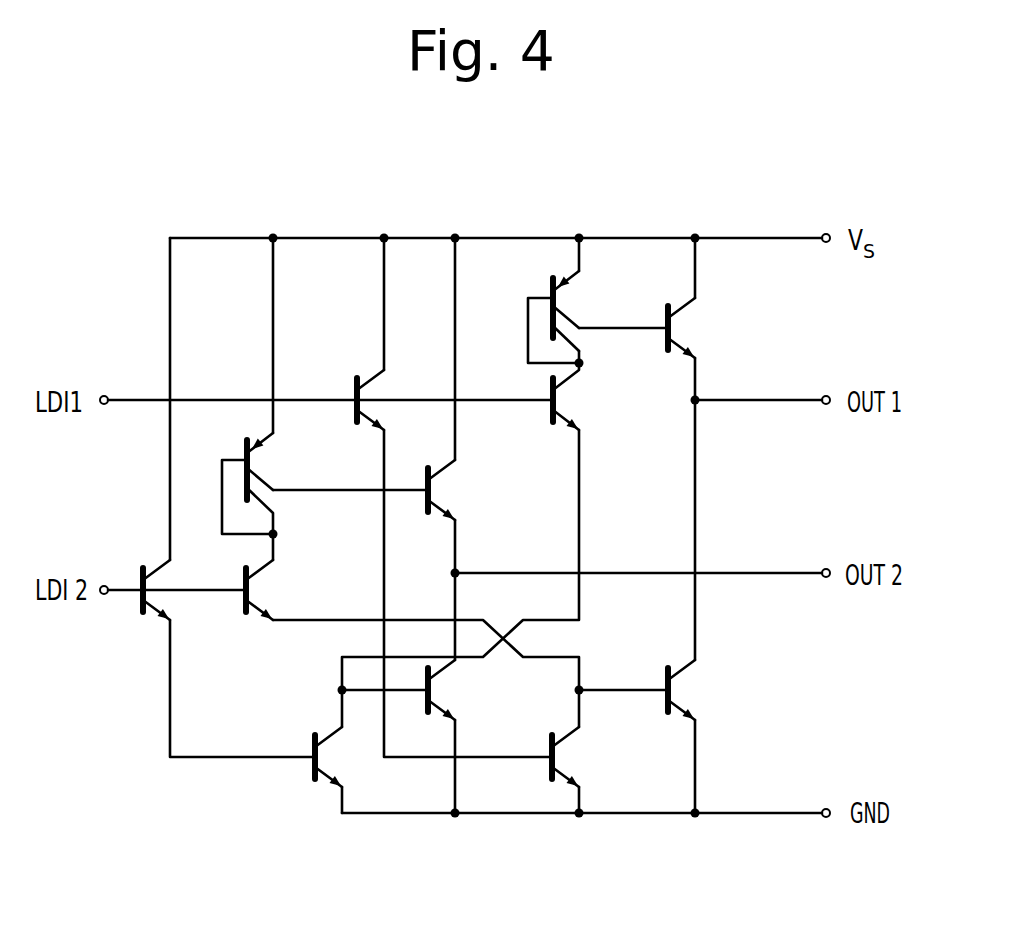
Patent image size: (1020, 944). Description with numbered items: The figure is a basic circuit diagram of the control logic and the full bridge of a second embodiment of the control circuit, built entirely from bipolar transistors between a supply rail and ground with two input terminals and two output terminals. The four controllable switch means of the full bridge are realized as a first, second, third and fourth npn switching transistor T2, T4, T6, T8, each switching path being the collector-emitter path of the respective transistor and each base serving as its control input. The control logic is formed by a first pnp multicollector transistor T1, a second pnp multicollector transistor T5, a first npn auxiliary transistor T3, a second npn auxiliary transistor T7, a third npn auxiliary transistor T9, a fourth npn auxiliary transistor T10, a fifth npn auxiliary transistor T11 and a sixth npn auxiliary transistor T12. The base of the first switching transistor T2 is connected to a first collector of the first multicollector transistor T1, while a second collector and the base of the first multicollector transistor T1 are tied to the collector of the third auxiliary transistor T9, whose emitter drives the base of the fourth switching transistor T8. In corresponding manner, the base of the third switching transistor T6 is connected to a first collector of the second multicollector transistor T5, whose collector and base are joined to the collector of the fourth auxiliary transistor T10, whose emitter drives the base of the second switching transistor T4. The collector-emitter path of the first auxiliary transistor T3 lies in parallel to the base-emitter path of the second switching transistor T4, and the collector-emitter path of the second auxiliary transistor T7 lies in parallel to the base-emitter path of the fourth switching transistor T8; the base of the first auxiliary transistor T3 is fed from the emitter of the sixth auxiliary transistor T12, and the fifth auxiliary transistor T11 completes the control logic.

The first pnp multicollector transistor T1 is at (561, 317).
The first npn switching transistor T2 is at (691, 328).
The first npn auxiliary transistor T3 is at (573, 757).
The second npn switching transistor T4 is at (691, 690).
The second pnp multicollector transistor T5 is at (255, 483).
The third npn switching transistor T6 is at (450, 490).
The second npn auxiliary transistor T7 is at (336, 757).
The fourth npn switching transistor T8 is at (450, 690).
The third npn auxiliary transistor T9 is at (575, 396).
The fourth npn auxiliary transistor T10 is at (274, 590).
The fifth npn auxiliary transistor T11 is at (175, 588).
The sixth npn auxiliary transistor T12 is at (392, 398).